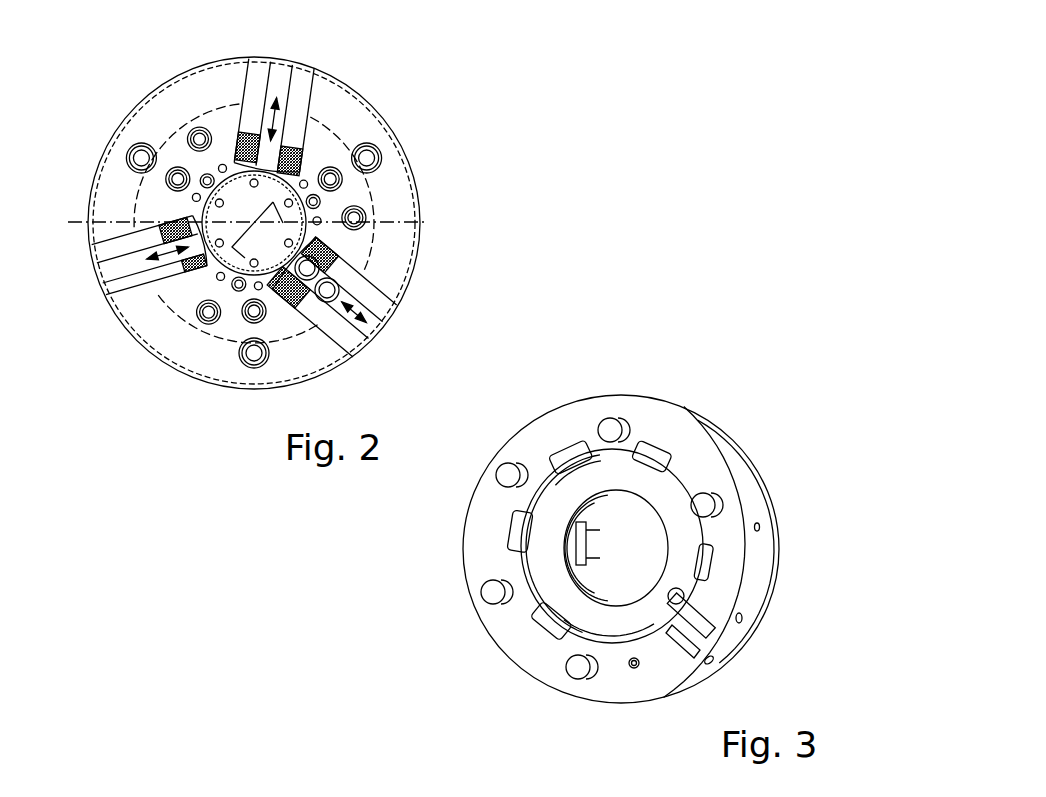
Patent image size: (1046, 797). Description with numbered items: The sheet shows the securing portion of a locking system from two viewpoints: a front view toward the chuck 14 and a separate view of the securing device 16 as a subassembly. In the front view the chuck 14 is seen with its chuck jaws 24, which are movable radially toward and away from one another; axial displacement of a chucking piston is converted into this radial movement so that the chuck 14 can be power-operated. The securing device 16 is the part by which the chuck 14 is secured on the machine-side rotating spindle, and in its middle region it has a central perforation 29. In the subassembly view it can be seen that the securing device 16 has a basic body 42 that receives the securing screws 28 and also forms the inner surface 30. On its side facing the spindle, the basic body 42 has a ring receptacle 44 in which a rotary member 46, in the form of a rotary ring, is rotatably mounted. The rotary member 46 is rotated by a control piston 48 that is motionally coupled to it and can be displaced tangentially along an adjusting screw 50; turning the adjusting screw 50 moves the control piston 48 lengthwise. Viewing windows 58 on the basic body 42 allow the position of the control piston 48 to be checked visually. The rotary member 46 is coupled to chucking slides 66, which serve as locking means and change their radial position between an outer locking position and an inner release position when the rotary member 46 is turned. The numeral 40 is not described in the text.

In FIG. 2, the chuck jaws 24 is at (283, 70).
In FIG. 2, the securing device 16 is at (480, 10).
In FIG. 3, the securing device 16 is at (604, 537).
In FIG. 2, the housing 40 is at (522, 10).
In FIG. 2, the chuck 14 is at (641, 4).
In FIG. 3, the securing screws 28 is at (610, 425).
In FIG. 3, the inner surface 30 is at (547, 480).
In FIG. 3, the ring receptacle 44 is at (537, 492).
In FIG. 3, the basic body 42 is at (729, 545).
In FIG. 3, the rotary member 46 is at (607, 625).
In FIG. 3, the control piston 48 is at (703, 608).
In FIG. 3, the adjusting screw 50 is at (683, 636).
In FIG. 3, the viewing windows 58 is at (740, 622).
In FIG. 3, the chucking slides 66 is at (592, 578).
In FIG. 3, the central perforation 29 is at (623, 585).